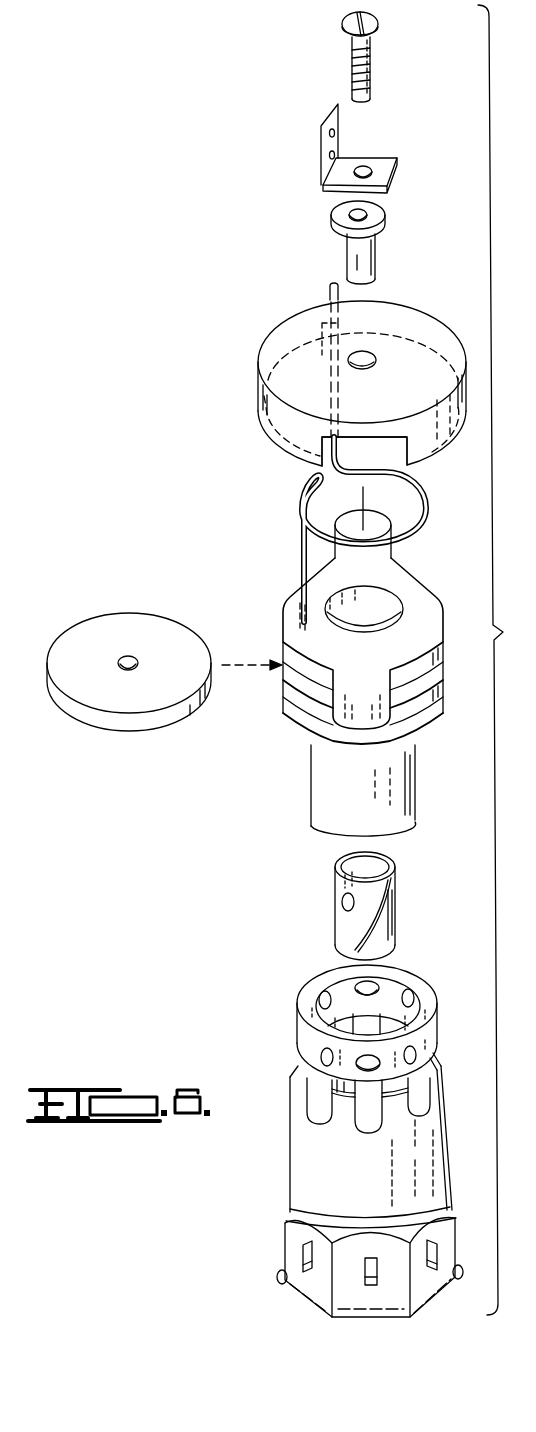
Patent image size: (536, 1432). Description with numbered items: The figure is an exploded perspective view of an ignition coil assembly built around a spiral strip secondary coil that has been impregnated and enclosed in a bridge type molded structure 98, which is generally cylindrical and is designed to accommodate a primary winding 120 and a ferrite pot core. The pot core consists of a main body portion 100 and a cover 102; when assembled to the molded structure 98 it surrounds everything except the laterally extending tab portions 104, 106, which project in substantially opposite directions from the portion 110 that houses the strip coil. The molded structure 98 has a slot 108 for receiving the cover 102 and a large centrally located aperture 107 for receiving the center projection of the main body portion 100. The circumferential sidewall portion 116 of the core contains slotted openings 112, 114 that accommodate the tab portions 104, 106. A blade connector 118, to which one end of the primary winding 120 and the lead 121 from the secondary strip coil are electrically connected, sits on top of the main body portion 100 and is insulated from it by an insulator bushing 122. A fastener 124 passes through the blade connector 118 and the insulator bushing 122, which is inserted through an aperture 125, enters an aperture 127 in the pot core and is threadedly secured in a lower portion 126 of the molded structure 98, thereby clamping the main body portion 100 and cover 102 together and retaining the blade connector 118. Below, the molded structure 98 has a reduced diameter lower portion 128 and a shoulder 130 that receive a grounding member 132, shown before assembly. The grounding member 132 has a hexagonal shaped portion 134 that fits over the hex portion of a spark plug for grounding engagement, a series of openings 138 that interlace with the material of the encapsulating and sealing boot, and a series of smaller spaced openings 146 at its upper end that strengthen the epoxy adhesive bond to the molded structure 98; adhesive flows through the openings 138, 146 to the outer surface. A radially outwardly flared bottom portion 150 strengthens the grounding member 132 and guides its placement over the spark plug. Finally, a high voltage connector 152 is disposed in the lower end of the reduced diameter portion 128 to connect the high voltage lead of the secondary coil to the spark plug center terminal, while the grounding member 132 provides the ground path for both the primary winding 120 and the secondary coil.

The molded structure 98 is at (359, 673).
The main body portion 100 is at (337, 369).
The cover 102 is at (136, 648).
The tab portion 104 is at (359, 636).
The tab portion 106 is at (393, 547).
The aperture 107 is at (396, 620).
The slot 108 is at (307, 694).
The portion 110 is at (412, 582).
The slotted opening 112 is at (405, 458).
The slotted opening 114 is at (402, 336).
The circumferential sidewall portion 116 is at (265, 403).
The blade connector 118 is at (382, 157).
The primary winding 120 is at (300, 500).
The lead 121 is at (363, 501).
The insulator bushing 122 is at (387, 210).
The fastener 124 is at (377, 25).
The aperture 125 is at (373, 357).
The lower portion 126 is at (443, 686).
The aperture 127 is at (131, 660).
The reduced diameter lower portion 128 is at (298, 753).
The shoulder 130 is at (432, 722).
The grounding member 132 is at (357, 1004).
The hexagonal shaped portion 134 is at (332, 1190).
The openings 138 is at (372, 1018).
The smaller spaced openings 146 is at (322, 996).
The flared bottom portion 150 is at (278, 1279).
The high voltage connector 152 is at (393, 905).